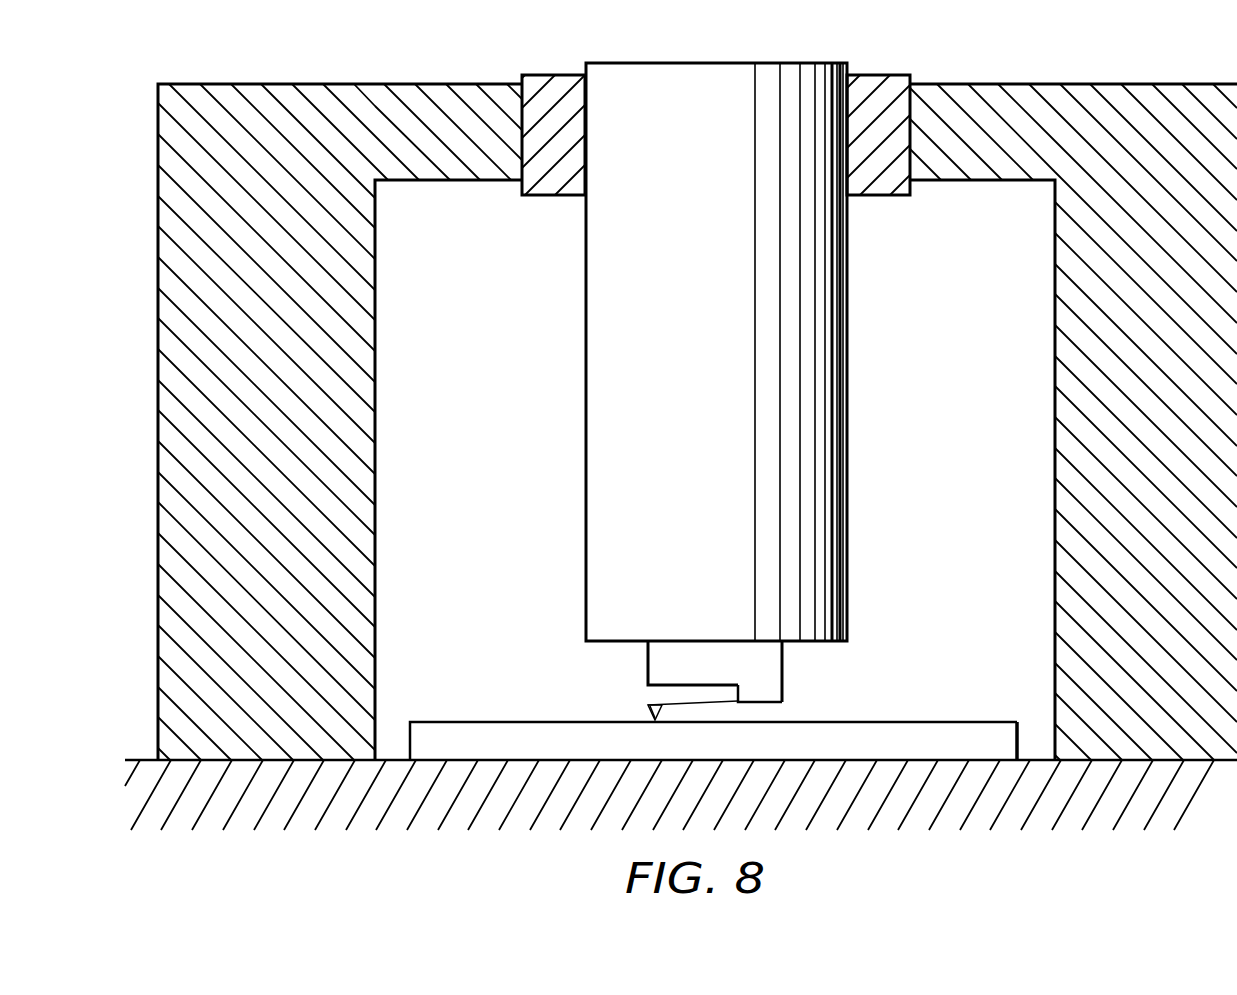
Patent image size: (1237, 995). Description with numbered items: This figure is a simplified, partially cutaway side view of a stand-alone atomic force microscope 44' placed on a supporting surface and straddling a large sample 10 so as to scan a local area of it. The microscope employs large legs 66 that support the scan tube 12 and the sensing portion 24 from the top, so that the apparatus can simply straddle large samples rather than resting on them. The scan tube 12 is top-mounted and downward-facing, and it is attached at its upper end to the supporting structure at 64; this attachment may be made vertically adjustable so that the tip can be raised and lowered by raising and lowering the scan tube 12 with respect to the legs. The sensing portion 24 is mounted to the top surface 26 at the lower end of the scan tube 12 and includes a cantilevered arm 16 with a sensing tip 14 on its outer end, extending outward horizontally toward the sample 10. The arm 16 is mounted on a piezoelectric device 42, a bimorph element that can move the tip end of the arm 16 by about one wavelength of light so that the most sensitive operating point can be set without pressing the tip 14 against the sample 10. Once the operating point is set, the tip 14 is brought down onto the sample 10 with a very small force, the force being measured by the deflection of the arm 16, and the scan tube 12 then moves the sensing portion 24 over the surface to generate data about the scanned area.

The sample 10 is at (890, 732).
The scan tube 12 is at (727, 324).
The sensing tip 14 is at (650, 707).
The cantilevered arm 16 is at (697, 705).
The sensing portion 24 is at (691, 677).
The top surface 26 is at (602, 643).
The piezoelectric device 42 is at (773, 697).
The stand-alone microscope 44' is at (484, 516).
The attachment of the scan tube to the body 64 is at (552, 197).
The large legs 66 is at (350, 445).